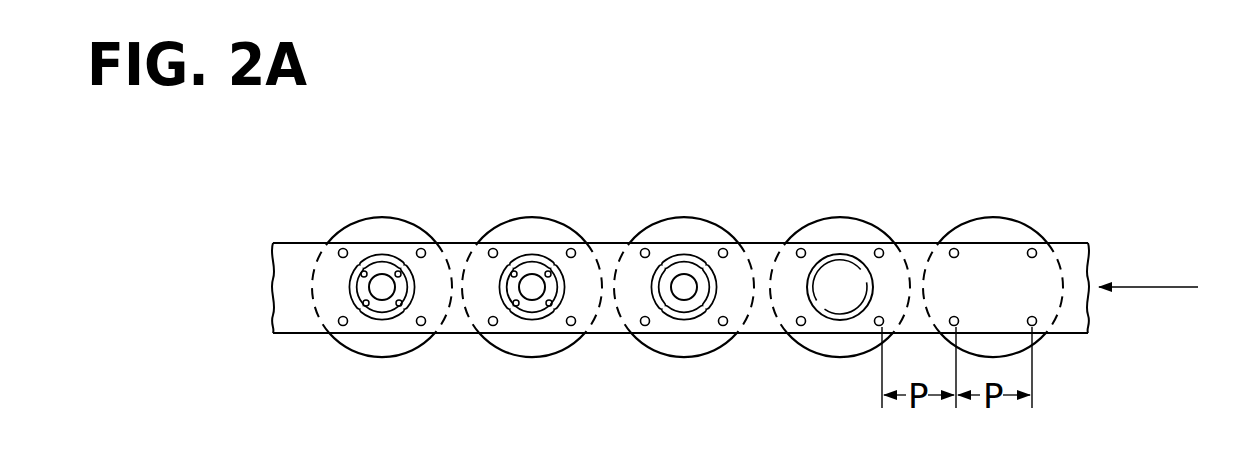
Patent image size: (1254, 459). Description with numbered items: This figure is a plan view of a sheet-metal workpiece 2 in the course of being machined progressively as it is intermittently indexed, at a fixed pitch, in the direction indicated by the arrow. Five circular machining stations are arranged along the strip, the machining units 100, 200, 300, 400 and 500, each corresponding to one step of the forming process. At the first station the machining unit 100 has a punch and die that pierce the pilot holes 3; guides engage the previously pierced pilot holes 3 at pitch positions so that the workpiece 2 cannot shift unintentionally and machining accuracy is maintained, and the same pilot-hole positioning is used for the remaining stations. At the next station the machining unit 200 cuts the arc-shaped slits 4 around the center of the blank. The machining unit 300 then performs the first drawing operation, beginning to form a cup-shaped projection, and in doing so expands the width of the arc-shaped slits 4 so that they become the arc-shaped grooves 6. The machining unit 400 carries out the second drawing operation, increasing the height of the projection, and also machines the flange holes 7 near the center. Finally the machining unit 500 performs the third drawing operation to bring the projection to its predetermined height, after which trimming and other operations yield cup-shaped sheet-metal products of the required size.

The workpiece 2 is at (1072, 243).
The pilot holes 3 is at (1036, 324).
The arc-shaped slits 4 is at (832, 321).
The arc-shaped grooves 6 is at (683, 318).
The flange holes 7 is at (518, 306).
The machining unit 100 is at (1000, 261).
The machining unit 200 is at (840, 263).
The machining unit 300 is at (684, 263).
The machining unit 400 is at (532, 263).
The machining unit 500 is at (374, 209).